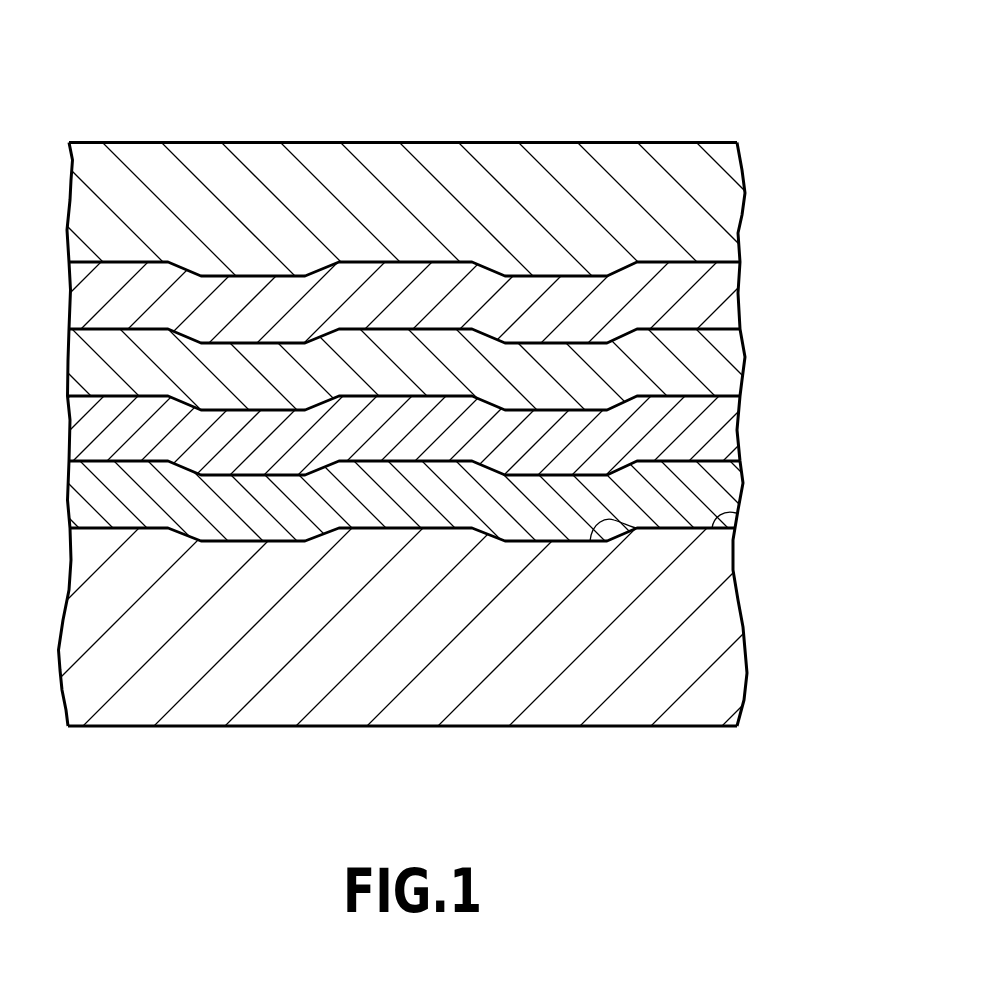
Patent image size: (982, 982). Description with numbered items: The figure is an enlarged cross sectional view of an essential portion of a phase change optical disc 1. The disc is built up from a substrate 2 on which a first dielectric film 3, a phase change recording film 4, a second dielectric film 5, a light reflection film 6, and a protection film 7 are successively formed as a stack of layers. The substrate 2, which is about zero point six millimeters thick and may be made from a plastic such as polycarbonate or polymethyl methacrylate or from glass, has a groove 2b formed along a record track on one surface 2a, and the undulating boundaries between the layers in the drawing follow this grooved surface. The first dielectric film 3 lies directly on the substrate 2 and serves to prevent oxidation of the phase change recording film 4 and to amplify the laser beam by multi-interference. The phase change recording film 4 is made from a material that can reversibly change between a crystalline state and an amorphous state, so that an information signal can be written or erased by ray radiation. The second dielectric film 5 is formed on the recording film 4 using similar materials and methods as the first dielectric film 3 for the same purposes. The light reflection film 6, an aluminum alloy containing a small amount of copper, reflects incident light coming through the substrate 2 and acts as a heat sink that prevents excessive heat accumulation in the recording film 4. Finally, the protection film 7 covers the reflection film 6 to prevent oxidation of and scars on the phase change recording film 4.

The laminated body 1 is at (730, 114).
The substrate 2 is at (747, 640).
The surface 2a is at (733, 512).
The groove 2b is at (637, 528).
The first dielectric film 3 is at (747, 482).
The phase change recording film 4 is at (735, 428).
The second dielectric film 5 is at (742, 358).
The light reflection film 6 is at (738, 295).
The protection film 7 is at (743, 217).